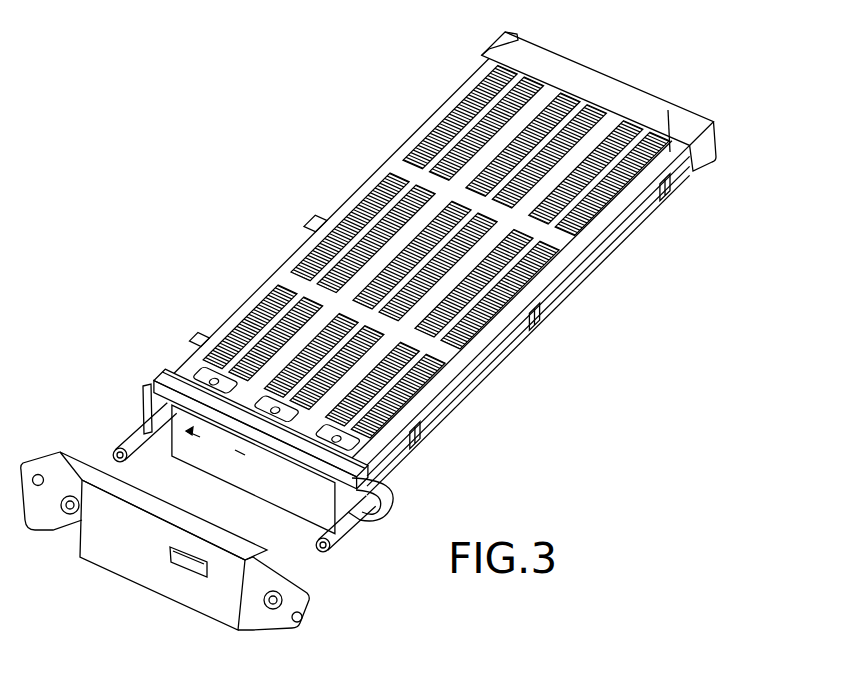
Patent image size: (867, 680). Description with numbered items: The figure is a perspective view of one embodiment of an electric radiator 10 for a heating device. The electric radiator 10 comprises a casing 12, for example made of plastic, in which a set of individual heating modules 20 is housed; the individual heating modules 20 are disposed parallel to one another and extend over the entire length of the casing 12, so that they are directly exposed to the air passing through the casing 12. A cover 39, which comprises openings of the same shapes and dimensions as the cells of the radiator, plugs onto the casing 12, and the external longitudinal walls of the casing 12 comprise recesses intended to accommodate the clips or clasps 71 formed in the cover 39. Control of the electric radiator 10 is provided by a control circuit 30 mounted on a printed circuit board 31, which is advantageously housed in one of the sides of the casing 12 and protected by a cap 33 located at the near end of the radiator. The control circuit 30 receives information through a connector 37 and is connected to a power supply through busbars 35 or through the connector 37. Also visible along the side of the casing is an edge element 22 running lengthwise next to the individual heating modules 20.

The electric radiator 10 is at (332, 176).
The casing 12 is at (716, 172).
The individual heating modules 20 is at (607, 228).
The edge rail 22 is at (547, 260).
The control circuit 30 is at (150, 392).
The printed circuit board 31 is at (215, 462).
The cap 33 is at (130, 575).
The busbars 35 is at (128, 440).
The connector 37 is at (353, 490).
The cover 39 is at (602, 78).
The clips or clasps 71 is at (677, 173).